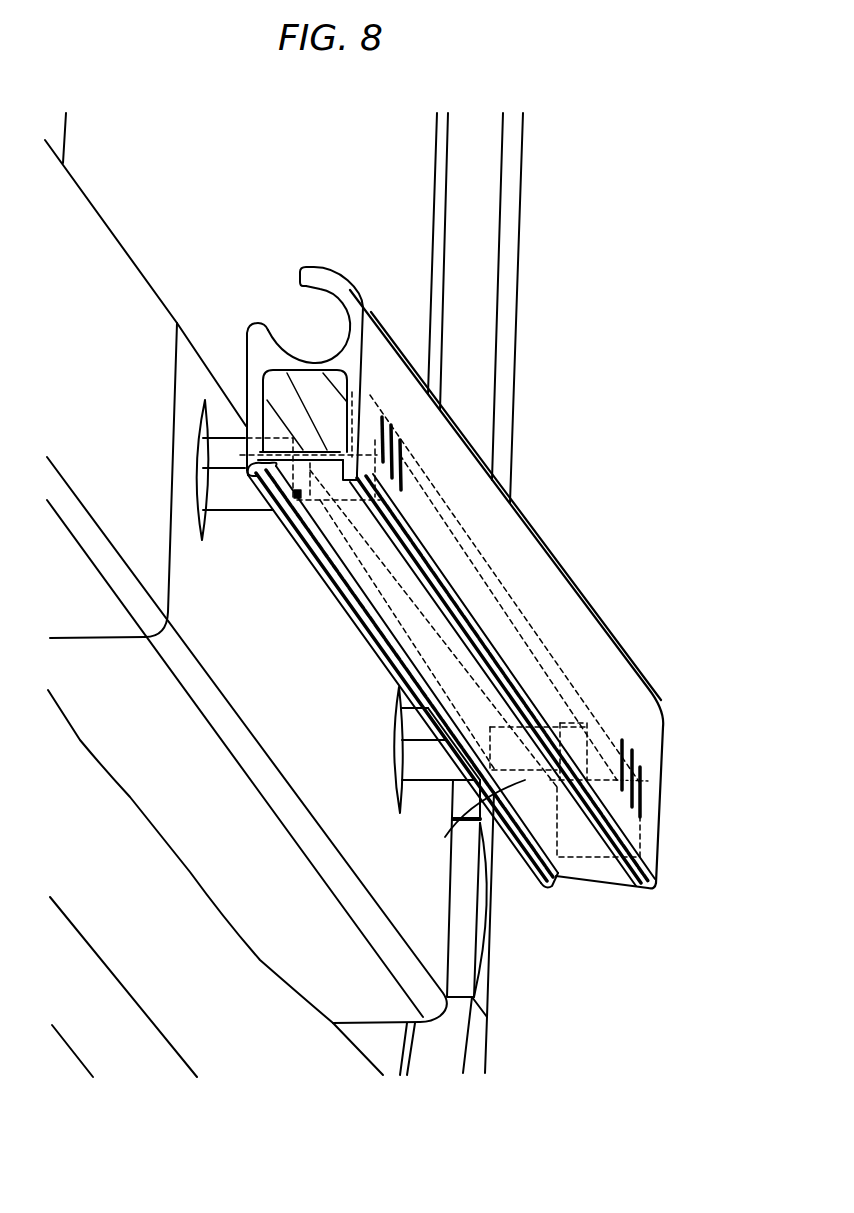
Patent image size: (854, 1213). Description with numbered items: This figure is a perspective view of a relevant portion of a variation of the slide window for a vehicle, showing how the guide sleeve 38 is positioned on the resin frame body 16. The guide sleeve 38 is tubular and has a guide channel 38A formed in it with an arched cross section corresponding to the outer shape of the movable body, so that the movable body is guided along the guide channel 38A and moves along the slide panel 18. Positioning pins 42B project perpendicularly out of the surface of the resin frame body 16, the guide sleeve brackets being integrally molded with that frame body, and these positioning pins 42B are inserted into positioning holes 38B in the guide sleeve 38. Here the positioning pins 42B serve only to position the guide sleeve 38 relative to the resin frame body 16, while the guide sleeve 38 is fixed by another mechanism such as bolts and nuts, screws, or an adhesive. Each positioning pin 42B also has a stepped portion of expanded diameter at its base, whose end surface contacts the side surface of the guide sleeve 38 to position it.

The resin frame body 16 is at (507, 390).
The slide panel 18 is at (323, 184).
The guide sleeve 38 is at (451, 559).
The guide channel 38A is at (318, 290).
The positioning holes 38B is at (297, 498).
The positioning pins 42B is at (223, 440).